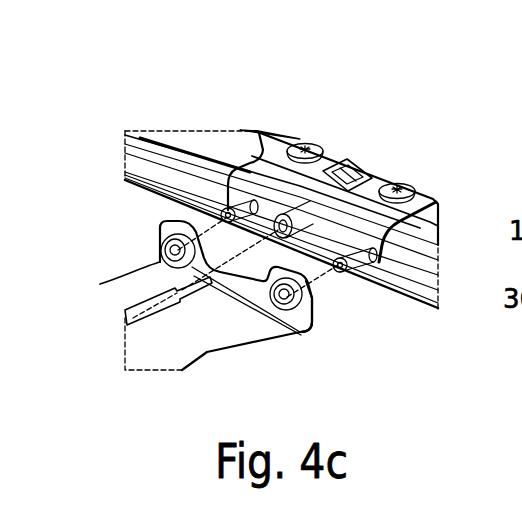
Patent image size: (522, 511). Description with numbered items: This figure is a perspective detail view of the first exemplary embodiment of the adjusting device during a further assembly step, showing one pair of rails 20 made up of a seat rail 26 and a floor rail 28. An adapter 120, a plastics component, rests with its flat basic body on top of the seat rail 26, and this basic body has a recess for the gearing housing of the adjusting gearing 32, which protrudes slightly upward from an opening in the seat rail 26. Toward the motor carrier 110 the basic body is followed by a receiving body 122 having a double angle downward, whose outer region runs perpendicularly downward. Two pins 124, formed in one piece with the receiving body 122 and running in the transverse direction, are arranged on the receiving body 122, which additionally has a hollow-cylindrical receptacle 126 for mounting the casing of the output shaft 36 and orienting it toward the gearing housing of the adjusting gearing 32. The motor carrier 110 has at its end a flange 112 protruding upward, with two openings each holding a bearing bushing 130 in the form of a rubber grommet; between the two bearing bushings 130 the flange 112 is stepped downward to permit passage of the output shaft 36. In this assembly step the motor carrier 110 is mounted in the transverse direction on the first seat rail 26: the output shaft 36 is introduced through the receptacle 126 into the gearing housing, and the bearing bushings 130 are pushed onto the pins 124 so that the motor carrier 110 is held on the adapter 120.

The pair of rails 20 is at (111, 126).
The seat rail 26 is at (306, 198).
The floor rail 28 is at (153, 172).
The adjusting gearing 32 is at (375, 160).
The output shaft 36 is at (125, 311).
The motor carrier 110 is at (168, 350).
The flange 112 is at (316, 298).
The adapter 120 is at (328, 153).
The receiving body 122 is at (393, 266).
The pin 124 is at (228, 210).
The receptacle 126 is at (262, 130).
The bearing bushing 130 is at (158, 254).